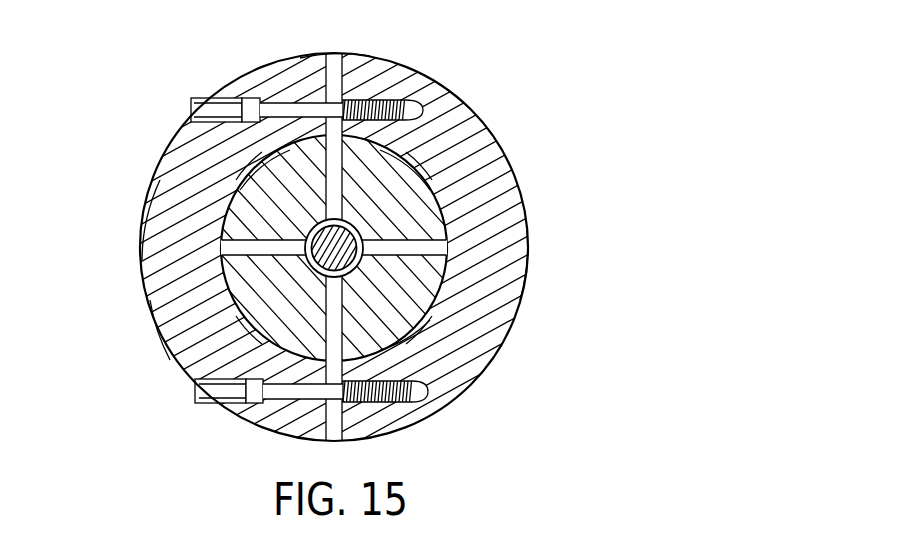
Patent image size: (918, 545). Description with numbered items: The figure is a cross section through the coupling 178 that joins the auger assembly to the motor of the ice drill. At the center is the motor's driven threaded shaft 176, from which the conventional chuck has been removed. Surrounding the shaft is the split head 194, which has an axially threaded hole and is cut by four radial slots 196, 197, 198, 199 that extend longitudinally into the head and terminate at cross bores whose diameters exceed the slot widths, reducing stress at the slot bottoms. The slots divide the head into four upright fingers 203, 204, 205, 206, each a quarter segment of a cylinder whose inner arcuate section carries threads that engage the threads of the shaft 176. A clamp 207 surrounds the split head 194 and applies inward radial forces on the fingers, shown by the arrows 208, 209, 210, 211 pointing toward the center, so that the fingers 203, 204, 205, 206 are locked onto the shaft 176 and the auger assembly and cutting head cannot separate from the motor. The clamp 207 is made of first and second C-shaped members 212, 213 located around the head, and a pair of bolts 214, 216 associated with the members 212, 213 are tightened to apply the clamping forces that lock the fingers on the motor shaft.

The clamp assembly 178 is at (117, 92).
The driven threaded shaft 176 is at (447, 200).
The split head 194 is at (395, 210).
The radial slot 196 is at (335, 322).
The radial slot 197 is at (500, 305).
The radial slot 198 is at (337, 183).
The radial slot 199 is at (262, 238).
The finger 203 is at (440, 367).
The finger 204 is at (432, 232).
The finger 205 is at (277, 203).
The finger 206 is at (157, 323).
The clamp 207 is at (385, 52).
The arrow 208 is at (427, 322).
The arrow 209 is at (422, 168).
The arrow 210 is at (248, 175).
The arrow 211 is at (262, 335).
The first C-shaped member 212 is at (195, 232).
The second C-shaped member 213 is at (507, 273).
The bolt 214 is at (292, 103).
The bolt 216 is at (320, 393).